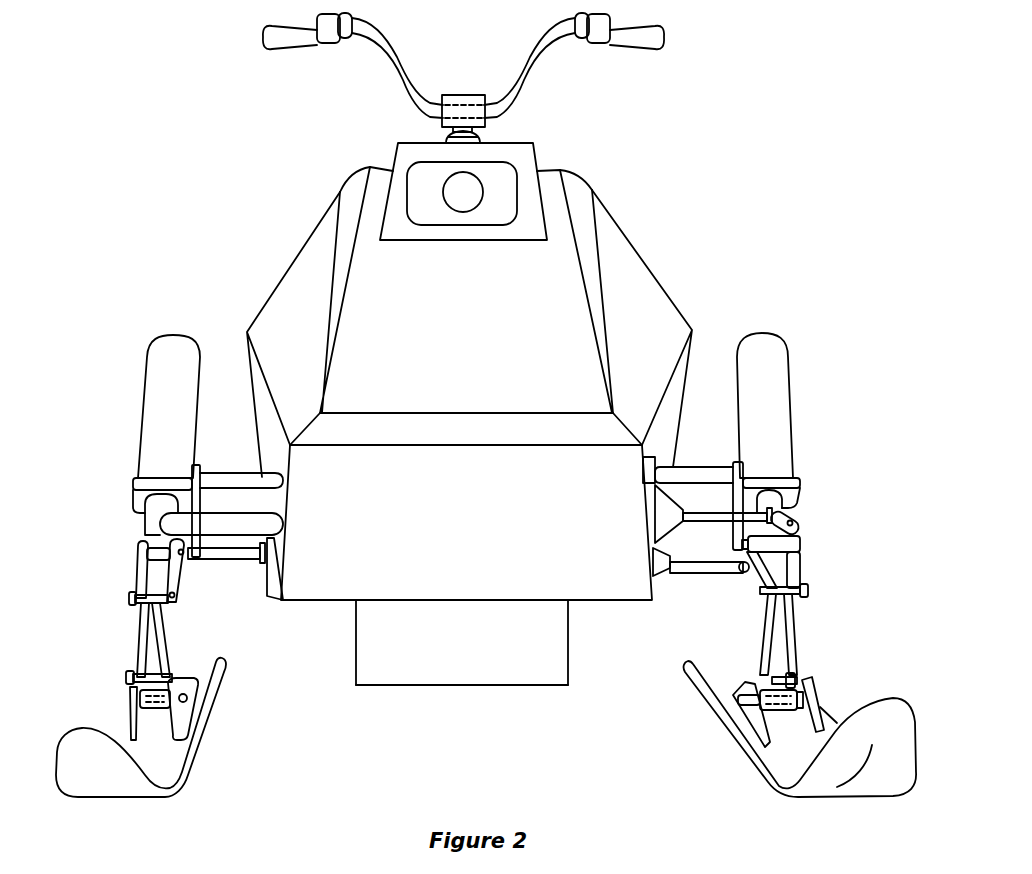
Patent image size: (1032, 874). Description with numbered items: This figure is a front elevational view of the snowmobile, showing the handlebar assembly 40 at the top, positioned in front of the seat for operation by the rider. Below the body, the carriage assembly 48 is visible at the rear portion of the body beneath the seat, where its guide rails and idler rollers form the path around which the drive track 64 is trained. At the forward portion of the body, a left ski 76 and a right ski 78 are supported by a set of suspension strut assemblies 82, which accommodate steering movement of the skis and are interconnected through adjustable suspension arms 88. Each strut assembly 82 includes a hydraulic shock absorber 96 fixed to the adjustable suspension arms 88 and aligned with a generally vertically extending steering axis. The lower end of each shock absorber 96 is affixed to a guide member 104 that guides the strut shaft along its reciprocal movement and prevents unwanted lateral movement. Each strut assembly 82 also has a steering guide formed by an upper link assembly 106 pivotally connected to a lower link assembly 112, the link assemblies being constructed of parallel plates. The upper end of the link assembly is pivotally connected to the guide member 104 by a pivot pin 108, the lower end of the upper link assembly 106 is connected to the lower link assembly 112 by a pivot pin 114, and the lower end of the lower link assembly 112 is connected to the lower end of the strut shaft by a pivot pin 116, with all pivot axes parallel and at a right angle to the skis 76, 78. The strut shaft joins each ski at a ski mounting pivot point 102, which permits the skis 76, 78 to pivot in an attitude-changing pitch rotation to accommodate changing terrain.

The handlebar assembly 40 is at (668, 40).
The carriage assembly 48 is at (518, 690).
The drive track 64 is at (402, 688).
The left ski 76 is at (733, 737).
The right ski 78 is at (216, 721).
The suspension strut assembly 82 is at (468, 410).
The adjustable suspension arm 88 is at (222, 470).
The hydraulic shock absorber 96 is at (143, 380).
The ski mounting pivot point 102 is at (200, 672).
The guide member 104 is at (142, 522).
The upper link assembly 106 is at (135, 565).
The pivot pin 108 is at (184, 555).
The lower link assembly 112 is at (135, 645).
The pivot pin 114 is at (128, 598).
The pivot pin 116 is at (123, 676).